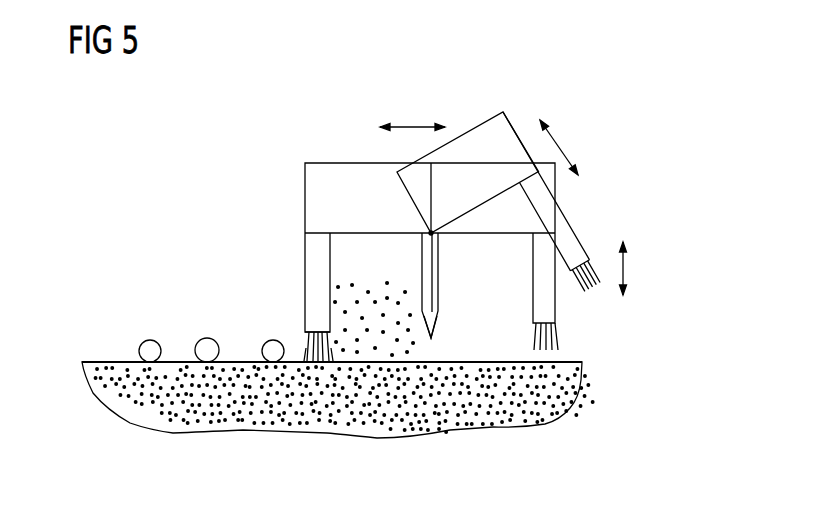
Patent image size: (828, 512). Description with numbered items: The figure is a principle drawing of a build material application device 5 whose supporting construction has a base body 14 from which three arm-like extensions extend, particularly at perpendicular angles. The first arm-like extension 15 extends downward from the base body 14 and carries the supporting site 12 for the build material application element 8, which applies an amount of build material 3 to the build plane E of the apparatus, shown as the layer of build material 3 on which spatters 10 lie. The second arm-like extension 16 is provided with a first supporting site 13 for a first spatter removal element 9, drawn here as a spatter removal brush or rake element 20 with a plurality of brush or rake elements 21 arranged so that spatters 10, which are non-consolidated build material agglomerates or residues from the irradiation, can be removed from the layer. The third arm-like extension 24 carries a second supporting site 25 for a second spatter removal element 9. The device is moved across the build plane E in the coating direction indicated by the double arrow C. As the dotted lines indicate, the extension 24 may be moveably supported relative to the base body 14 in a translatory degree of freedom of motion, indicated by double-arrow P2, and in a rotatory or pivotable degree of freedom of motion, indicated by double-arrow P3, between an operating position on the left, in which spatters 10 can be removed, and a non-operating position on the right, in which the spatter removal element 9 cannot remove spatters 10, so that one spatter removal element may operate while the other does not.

The build material application device 5 is at (461, 102).
The base body 14 is at (334, 178).
The first supporting site 13 is at (305, 234).
The supporting site 12 is at (443, 236).
The second arm-like extension 16 is at (312, 258).
The spatter removal brush or rake element 20 is at (297, 327).
The spatter removal element 9 is at (562, 316).
The brush or rake elements 21 is at (302, 354).
The first arm-like extension 15 is at (434, 284).
The build material application element 8 is at (436, 323).
The third arm-like extension 24 is at (553, 298).
The second supporting site 25 is at (548, 228).
The spatters 10 is at (150, 338).
The build material 3 is at (108, 362).
The direction of travel C is at (412, 127).
The build plane E is at (96, 298).
The double-arrow P2 (translatory degree of freedom of motion) P2 is at (626, 268).
The double-arrow P3 (rotatory/pivotable degree of freedom of motion) P3 is at (560, 147).